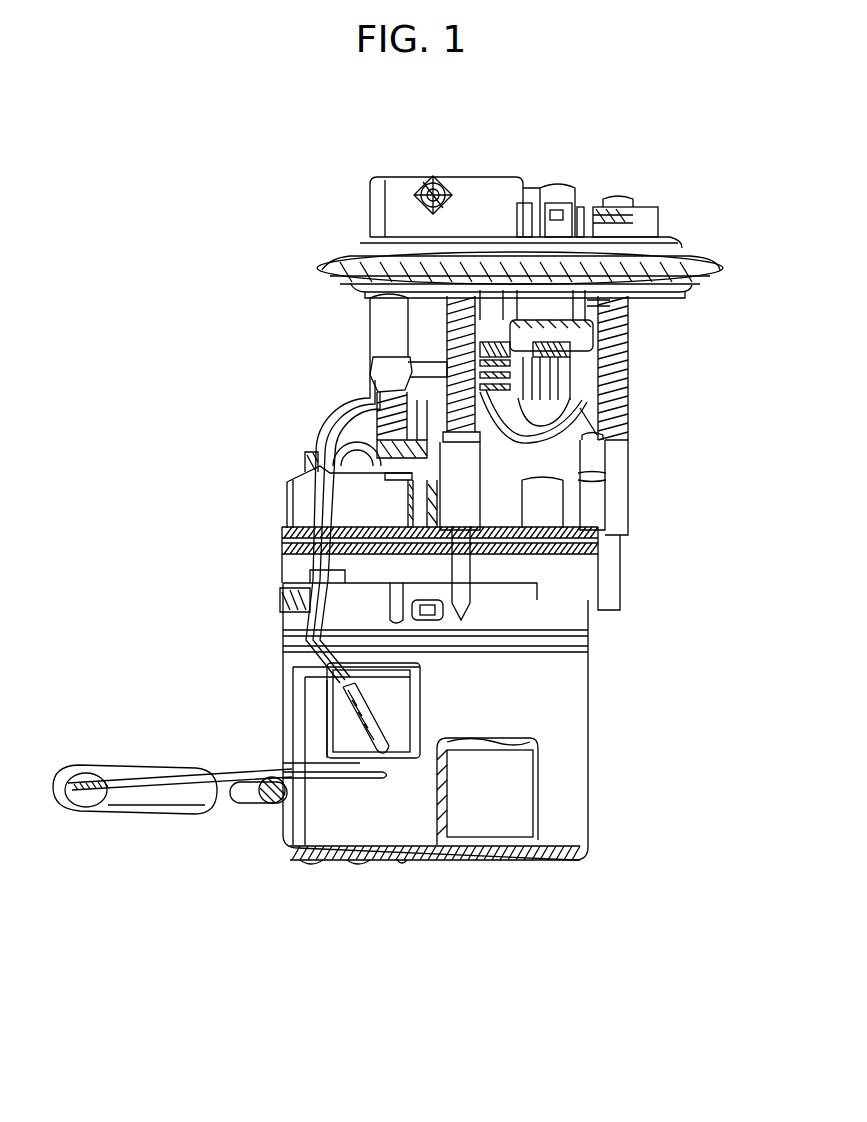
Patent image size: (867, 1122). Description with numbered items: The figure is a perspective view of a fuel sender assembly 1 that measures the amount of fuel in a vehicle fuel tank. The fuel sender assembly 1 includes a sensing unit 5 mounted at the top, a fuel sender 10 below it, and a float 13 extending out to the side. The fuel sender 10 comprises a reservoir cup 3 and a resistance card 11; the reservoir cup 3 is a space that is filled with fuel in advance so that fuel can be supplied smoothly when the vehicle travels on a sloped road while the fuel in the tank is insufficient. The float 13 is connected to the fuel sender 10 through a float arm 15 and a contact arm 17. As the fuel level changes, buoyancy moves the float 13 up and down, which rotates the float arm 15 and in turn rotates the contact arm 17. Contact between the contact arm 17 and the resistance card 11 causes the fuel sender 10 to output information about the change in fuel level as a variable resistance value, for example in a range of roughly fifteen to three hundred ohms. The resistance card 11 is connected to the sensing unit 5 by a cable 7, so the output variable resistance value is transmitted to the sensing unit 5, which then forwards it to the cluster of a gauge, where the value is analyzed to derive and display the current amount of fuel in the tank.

The fuel sender assembly 1 is at (675, 223).
The reservoir cup 3 is at (572, 575).
The sensing unit 5 is at (594, 303).
The cable 7 is at (312, 624).
The fuel sender 10 is at (425, 683).
The resistance card 11 is at (342, 725).
The float 13 is at (147, 795).
The float arm 15 is at (172, 768).
The contact arm 17 is at (540, 757).